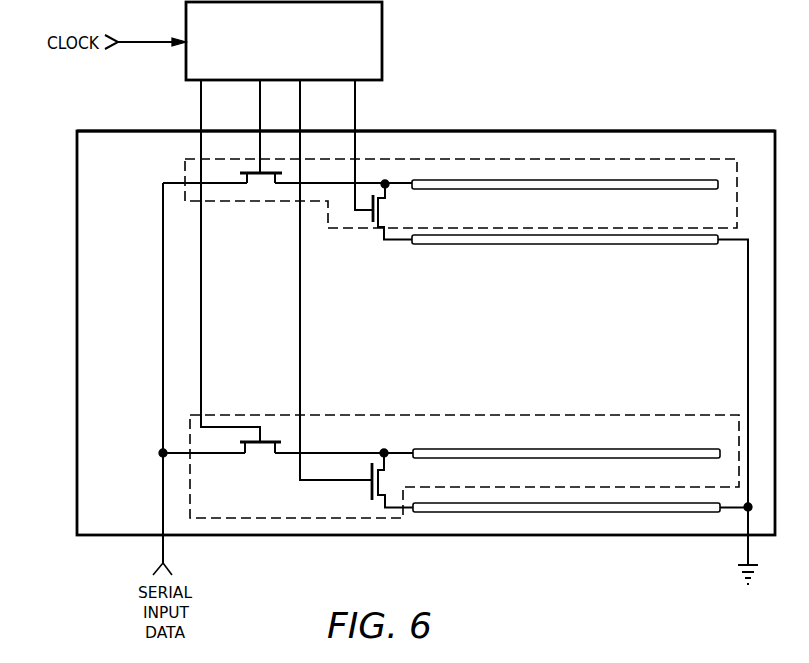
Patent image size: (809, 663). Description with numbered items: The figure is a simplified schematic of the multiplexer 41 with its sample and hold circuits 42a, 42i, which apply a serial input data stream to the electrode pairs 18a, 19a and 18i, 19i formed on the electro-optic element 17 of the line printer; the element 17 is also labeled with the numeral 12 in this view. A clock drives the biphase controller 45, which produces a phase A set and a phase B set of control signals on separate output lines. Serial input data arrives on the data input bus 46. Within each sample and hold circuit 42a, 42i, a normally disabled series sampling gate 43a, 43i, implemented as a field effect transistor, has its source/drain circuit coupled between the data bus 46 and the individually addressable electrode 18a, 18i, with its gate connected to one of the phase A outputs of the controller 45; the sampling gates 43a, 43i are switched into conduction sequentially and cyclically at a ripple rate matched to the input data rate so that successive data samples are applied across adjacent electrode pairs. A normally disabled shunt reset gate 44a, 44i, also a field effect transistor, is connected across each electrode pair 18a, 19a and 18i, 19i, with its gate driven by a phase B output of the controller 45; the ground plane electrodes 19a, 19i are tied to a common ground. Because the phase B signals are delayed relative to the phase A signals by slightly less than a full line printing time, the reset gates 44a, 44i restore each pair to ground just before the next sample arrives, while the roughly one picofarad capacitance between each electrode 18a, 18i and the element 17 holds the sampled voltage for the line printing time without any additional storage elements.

The display device 12 is at (605, 120).
The electro-optic element 17 is at (478, 131).
The individually addressable electrode 18a is at (558, 190).
The ground plane electrode 19a is at (540, 245).
The individually addressable electrode 18i is at (545, 448).
The ground plane electrode 19i is at (547, 512).
The multiplexer 41 is at (152, 295).
The sample and hold circuit 42a is at (718, 150).
The sample and hold circuit 42i is at (662, 400).
The series sampling gate 43a is at (245, 170).
The series sampling gate 43i is at (273, 440).
The shunt reset gate 44a is at (372, 224).
The shunt reset gate 44i is at (368, 490).
The biphase controller 45 is at (382, 33).
The data input bus 46 is at (162, 490).